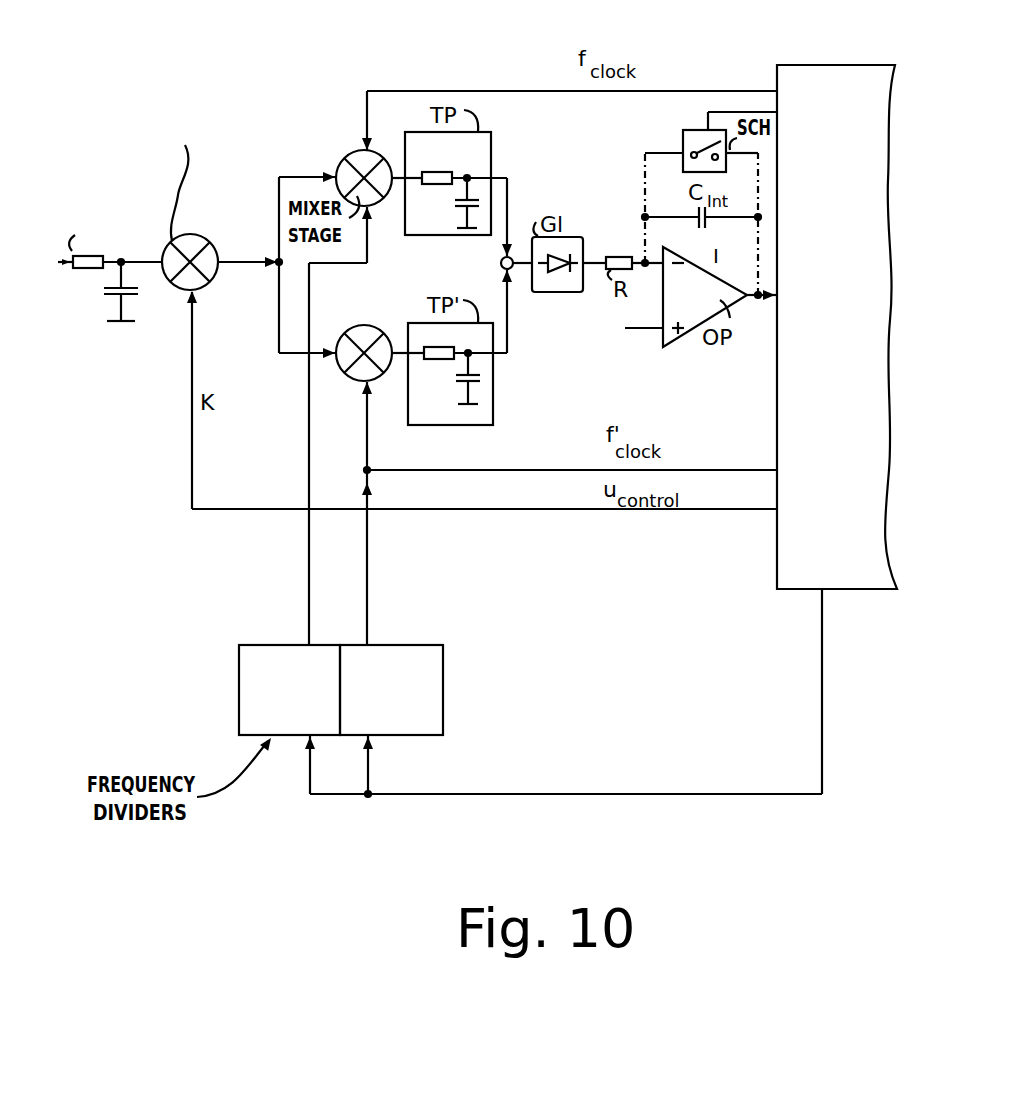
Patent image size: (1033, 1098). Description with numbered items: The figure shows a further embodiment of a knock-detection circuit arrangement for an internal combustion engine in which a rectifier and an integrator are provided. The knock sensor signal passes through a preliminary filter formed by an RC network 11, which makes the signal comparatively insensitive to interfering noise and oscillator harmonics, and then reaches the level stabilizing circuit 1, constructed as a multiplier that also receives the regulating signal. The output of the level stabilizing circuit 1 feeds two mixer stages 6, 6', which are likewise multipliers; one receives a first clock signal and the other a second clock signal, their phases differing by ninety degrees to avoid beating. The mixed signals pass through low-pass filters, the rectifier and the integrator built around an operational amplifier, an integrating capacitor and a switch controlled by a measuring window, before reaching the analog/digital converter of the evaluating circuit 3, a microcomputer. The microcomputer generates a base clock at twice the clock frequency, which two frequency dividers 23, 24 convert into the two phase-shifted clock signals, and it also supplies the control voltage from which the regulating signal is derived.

The level stabilizing circuit 1 is at (183, 216).
The evaluating circuit 3 is at (872, 103).
The mixer stage 6 is at (346, 129).
The mixer stage 6' is at (371, 314).
The RC network 11 is at (92, 278).
The frequency divider 23 is at (248, 672).
The frequency divider 24 is at (432, 671).